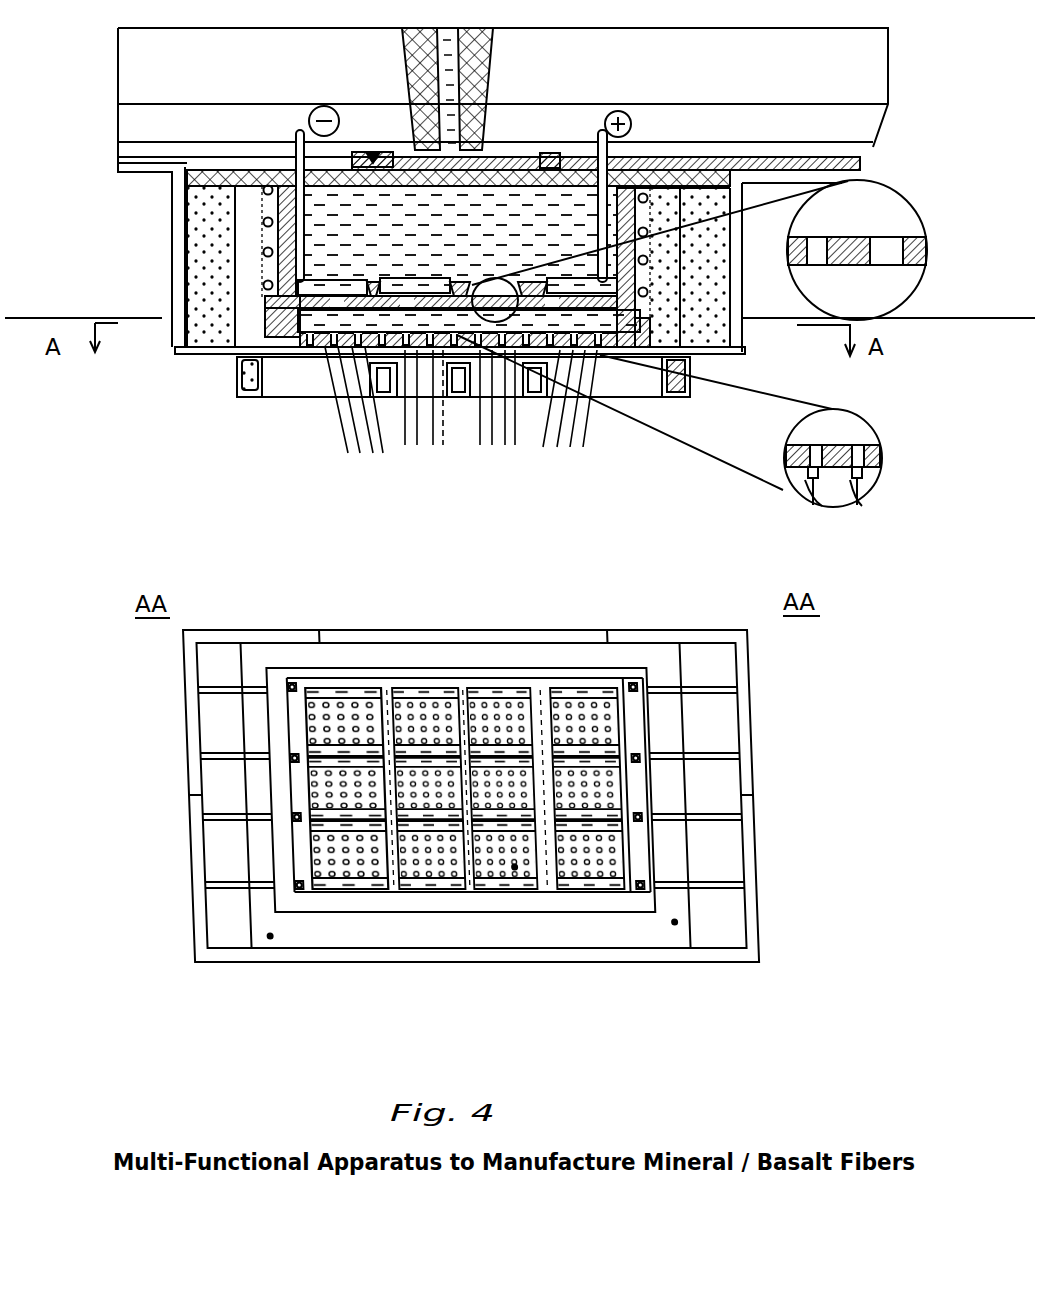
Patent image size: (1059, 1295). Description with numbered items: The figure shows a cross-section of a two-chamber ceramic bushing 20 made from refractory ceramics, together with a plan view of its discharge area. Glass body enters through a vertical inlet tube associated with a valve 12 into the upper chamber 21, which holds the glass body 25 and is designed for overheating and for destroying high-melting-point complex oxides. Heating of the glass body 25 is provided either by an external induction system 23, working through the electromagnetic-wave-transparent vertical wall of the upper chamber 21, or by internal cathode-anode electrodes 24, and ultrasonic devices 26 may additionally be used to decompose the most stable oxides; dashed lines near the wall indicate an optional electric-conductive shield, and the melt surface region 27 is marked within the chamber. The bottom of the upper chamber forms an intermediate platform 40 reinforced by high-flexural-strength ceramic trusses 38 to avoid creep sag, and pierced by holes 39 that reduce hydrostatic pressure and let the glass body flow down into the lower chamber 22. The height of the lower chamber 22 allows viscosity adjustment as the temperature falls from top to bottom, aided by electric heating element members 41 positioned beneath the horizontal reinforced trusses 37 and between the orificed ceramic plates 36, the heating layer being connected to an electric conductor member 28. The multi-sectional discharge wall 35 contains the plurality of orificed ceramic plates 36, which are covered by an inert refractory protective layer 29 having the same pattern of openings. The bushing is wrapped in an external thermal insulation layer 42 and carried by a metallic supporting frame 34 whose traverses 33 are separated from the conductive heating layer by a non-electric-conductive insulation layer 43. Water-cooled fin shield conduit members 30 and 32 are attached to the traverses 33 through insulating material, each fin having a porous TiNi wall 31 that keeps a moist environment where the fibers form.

The valve 12 is at (484, 146).
The two-chamber ceramic bushing 20 is at (682, 270).
The upper chamber 21 is at (652, 213).
The lower chamber 22 is at (652, 327).
The external induction heating system 23 is at (264, 227).
The cathode-anode electrodes 24 is at (296, 131).
The glass body 25 is at (458, 234).
The ultrasonic devices 26 is at (373, 150).
The melt surface 27 is at (406, 202).
The electric conductor member 28 is at (290, 765).
The inert refractory protective layer 29 is at (344, 759).
The water cooled fin shield conduit members 30 is at (265, 936).
The fin wall 31 is at (281, 681).
The water cooled fin shield conduit 32 is at (398, 380).
The traverses 33 is at (225, 687).
The metallic supporting frame 34 is at (197, 797).
The multi-sectional discharge wall 35 is at (882, 458).
The orificed ceramic plates 36 is at (512, 867).
The horizontal reinforced trusses 37 is at (544, 688).
The high-flexural strength trusses 38 is at (446, 268).
The holes/openings 39 is at (817, 262).
The intermediate platform 40 is at (864, 262).
The electric heating element members 41 is at (798, 484).
The external thermal insulation layer 42 is at (250, 277).
The non-electric conductive insulation layer 43 is at (257, 386).